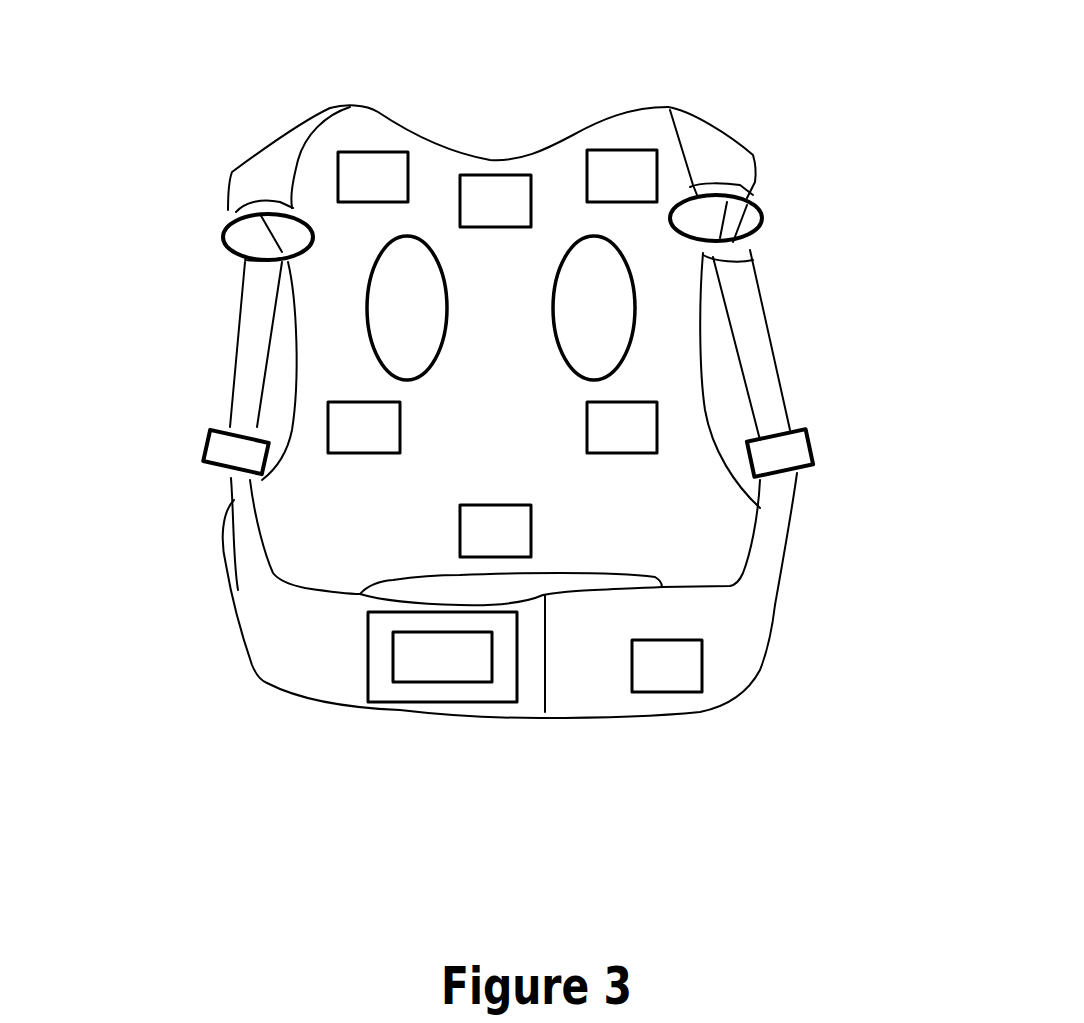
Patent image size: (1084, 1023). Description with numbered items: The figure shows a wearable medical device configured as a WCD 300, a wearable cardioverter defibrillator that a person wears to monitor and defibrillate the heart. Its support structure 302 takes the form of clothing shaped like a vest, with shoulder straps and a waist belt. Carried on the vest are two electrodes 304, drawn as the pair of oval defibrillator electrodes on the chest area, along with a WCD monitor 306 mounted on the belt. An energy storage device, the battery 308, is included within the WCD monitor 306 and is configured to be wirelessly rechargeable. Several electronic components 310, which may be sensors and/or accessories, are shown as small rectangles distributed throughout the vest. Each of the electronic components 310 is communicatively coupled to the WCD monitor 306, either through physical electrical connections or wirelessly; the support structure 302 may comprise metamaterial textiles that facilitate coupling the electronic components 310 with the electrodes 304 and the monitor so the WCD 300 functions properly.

The WCD 300 is at (913, 97).
The support structure 302 is at (405, 120).
The electrodes 304 is at (367, 335).
The WCD monitor 306 is at (368, 660).
The battery 308 is at (453, 683).
The electronic components 310 is at (357, 150).